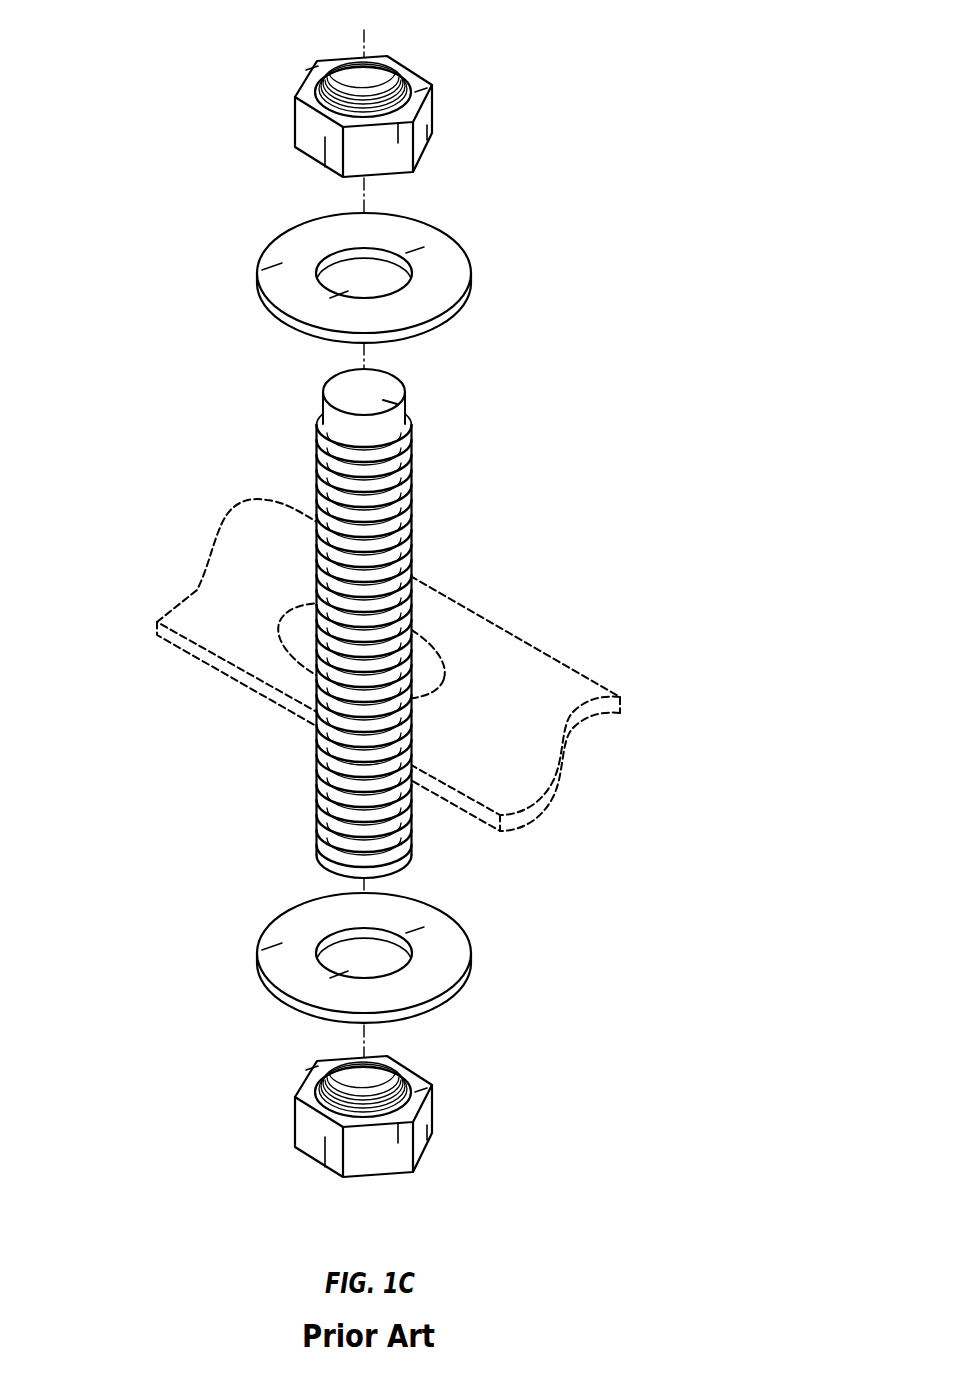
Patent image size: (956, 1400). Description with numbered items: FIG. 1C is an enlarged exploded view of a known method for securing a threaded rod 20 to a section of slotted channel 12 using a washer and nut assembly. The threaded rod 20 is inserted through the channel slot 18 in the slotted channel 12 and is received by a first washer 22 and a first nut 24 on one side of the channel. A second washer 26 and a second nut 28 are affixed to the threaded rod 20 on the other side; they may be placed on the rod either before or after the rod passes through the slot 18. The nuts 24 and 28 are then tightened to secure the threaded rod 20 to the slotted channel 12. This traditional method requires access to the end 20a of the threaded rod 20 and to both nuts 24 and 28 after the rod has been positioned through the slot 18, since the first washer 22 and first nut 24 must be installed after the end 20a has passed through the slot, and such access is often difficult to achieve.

The slotted channel 12 is at (260, 662).
The channel slot 18 is at (437, 658).
The threaded rod 20 is at (459, 610).
The end of threaded rod 20a is at (400, 393).
The first washer 22 is at (452, 277).
The first nut 24 is at (422, 121).
The second washer 26 is at (453, 967).
The second nut 28 is at (430, 1130).